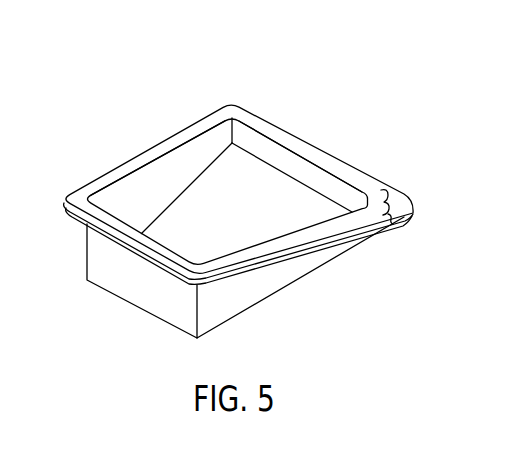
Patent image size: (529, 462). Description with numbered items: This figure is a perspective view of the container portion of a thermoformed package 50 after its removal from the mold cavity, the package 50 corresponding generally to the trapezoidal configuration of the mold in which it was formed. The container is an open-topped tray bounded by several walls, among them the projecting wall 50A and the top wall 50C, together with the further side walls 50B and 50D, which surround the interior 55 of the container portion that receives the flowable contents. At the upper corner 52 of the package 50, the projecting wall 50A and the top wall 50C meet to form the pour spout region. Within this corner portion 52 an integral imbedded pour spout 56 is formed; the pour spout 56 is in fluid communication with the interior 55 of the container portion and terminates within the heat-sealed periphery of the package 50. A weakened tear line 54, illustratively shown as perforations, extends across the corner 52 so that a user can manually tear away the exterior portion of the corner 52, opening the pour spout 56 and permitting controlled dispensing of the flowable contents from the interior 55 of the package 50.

The package 50 is at (114, 64).
The projecting wall 50A is at (320, 241).
The back-left side wall 50B is at (191, 121).
The top wall 50C is at (317, 148).
The front-left side wall 50D is at (87, 226).
The upper corner 52 is at (406, 211).
The weakened tear line 54 is at (388, 196).
The interior 55 is at (195, 224).
The integral imbedded pour spout 56 is at (393, 226).